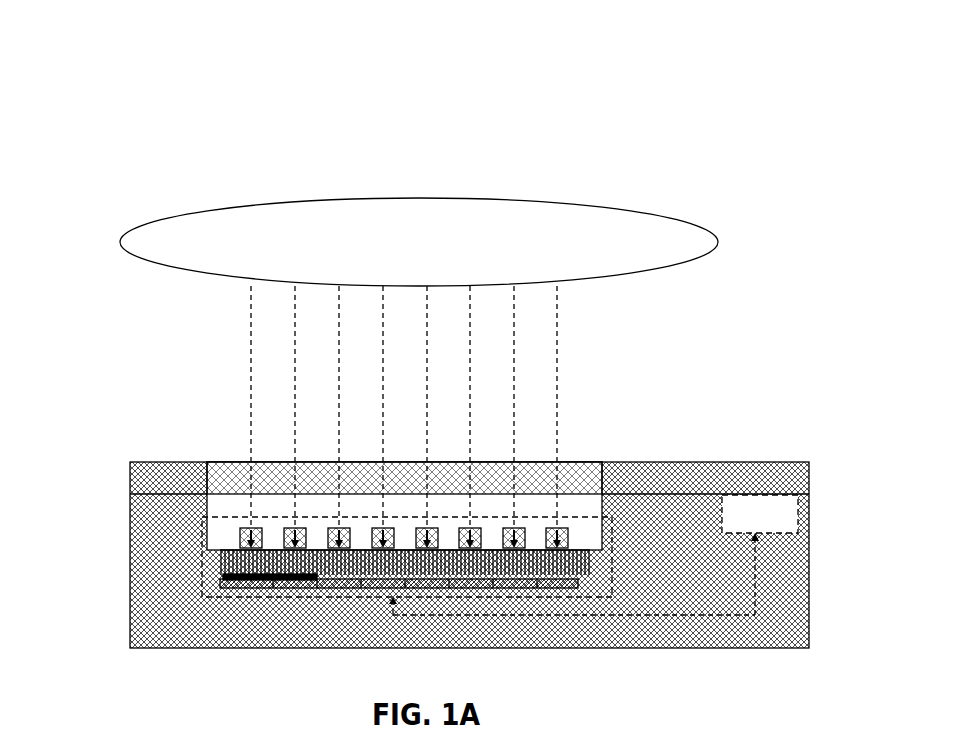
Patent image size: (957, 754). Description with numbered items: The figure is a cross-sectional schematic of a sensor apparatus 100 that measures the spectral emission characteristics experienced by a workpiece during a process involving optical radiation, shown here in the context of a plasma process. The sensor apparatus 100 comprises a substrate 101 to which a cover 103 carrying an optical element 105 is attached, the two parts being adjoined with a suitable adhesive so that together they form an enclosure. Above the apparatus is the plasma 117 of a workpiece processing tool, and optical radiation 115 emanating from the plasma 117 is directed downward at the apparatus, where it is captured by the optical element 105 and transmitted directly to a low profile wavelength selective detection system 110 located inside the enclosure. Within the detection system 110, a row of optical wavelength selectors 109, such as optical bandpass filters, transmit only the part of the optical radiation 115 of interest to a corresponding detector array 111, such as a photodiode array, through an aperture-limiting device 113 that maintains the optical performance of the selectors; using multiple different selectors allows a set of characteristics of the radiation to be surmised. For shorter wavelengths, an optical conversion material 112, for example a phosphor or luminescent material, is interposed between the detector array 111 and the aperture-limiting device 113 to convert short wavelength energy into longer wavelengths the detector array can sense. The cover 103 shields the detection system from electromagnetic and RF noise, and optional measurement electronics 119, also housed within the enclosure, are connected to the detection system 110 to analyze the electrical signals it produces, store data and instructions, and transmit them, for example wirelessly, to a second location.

The sensor apparatus 100 is at (82, 54).
The substrate 101 is at (130, 618).
The cover 103 is at (809, 474).
The optical element 105 is at (580, 461).
The optical wavelength selectors 109 is at (240, 538).
The low profile wavelength selective detection system 110 is at (612, 549).
The detector array 111 is at (230, 588).
The optical conversion material 112 is at (223, 576).
The aperture-limiting device 113 is at (590, 570).
The optical radiation 115 is at (558, 366).
The plasma 117 is at (718, 241).
The measurement electronics 119 is at (722, 517).